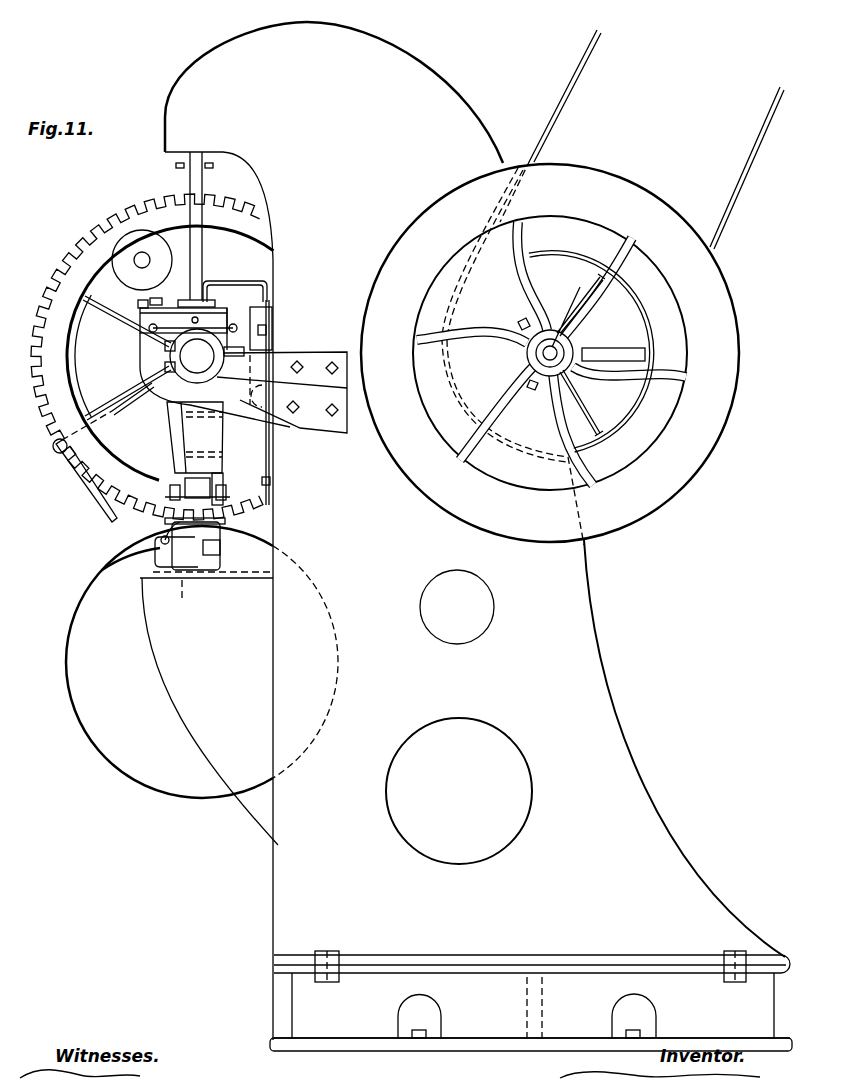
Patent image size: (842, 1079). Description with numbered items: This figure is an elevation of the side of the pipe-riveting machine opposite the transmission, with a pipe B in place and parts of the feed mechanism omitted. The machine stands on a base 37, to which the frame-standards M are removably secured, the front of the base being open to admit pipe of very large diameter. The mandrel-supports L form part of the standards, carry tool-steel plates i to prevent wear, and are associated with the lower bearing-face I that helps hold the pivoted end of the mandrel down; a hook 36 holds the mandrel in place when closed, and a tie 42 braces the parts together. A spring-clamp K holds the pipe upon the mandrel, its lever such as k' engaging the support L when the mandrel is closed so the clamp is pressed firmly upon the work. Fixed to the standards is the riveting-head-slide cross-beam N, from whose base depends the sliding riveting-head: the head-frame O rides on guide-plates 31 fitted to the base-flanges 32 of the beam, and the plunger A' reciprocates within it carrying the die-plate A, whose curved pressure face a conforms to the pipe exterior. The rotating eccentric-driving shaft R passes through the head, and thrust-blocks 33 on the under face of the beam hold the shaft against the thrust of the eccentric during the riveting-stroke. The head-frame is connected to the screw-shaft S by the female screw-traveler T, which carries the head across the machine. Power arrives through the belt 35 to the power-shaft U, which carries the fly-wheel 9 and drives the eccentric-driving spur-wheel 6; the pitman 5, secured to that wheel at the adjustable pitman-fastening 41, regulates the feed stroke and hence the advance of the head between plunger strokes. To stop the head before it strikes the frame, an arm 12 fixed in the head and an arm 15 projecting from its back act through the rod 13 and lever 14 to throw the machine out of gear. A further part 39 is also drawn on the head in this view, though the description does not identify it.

The frame-standard M is at (475, 531).
The base 37 is at (531, 1001).
The fly-wheel 9 is at (550, 353).
The power-shaft U is at (581, 355).
The belt 35 is at (578, 70).
The eccentric-driving spur-wheel 6 is at (152, 357).
The pitman-fastening 41 is at (79, 356).
The screw-shaft S is at (138, 258).
The riveting-head-slide cross-beam N is at (190, 185).
The guide-plate 31 is at (150, 307).
The base-flange 32 is at (208, 303).
The thrust-block 33 is at (178, 330).
The female screw-traveler T is at (158, 300).
The eccentric-driving shaft R is at (266, 332).
The head-frame O is at (240, 335).
The arm 15 is at (262, 347).
The lever 14 is at (266, 437).
The slide block 39 is at (170, 431).
The plunger A' is at (171, 470).
The arm 12 is at (222, 490).
The rod 13 is at (270, 481).
The die-plate A is at (172, 512).
The spring-clamp K is at (225, 530).
The lever k' is at (227, 554).
The pressure face a is at (162, 540).
The hook piece E is at (178, 556).
The tool-steel plate i is at (179, 599).
The lower bearing-face I is at (193, 580).
The mandrel-support L is at (210, 711).
The pipe B is at (70, 668).
The hook 36 is at (108, 570).
The pitman 5 is at (95, 500).
The tie 42 is at (158, 342).